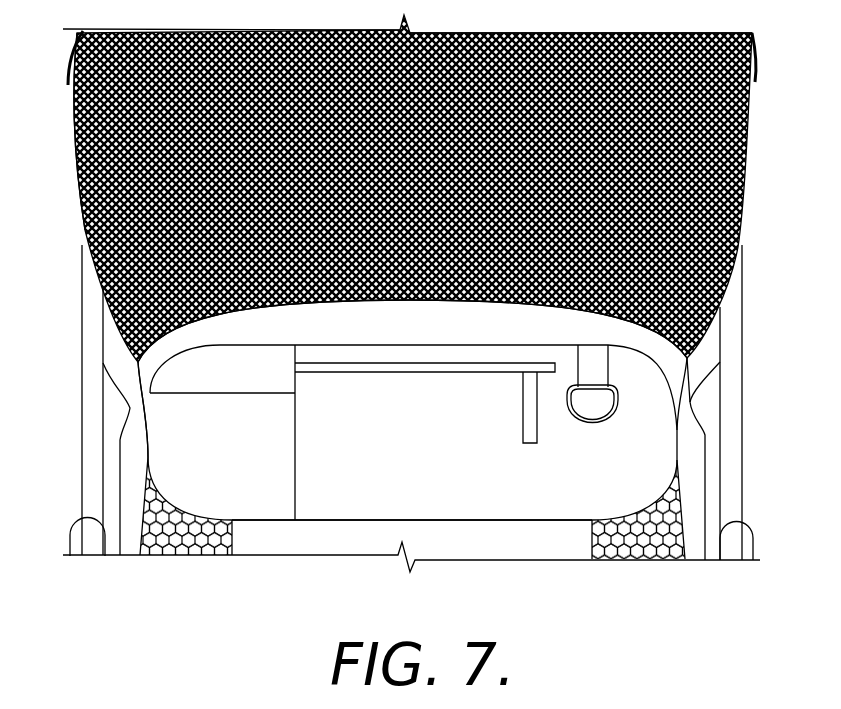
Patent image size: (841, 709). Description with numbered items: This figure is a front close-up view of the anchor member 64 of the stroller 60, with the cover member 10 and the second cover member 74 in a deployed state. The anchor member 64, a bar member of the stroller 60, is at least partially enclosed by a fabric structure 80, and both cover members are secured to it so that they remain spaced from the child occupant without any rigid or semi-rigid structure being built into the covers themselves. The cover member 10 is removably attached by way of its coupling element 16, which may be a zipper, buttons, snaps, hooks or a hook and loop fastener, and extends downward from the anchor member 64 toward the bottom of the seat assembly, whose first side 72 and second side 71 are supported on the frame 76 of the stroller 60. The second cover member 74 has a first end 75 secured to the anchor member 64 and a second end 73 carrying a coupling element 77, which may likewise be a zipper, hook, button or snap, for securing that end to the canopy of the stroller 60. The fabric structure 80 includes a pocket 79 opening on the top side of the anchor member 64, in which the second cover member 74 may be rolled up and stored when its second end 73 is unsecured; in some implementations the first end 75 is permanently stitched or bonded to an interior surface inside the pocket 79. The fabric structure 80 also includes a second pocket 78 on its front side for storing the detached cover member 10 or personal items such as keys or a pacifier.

The cover member 10 is at (648, 538).
The coupling element 16 is at (193, 520).
The stroller 60 is at (760, 515).
The anchor member 64 is at (140, 377).
The second side 71 is at (125, 470).
The first side 72 is at (698, 437).
The second end 73 is at (752, 85).
The second cover member 74 is at (95, 255).
The first end 75 is at (127, 367).
The frame 76 is at (733, 397).
The coupling element 77 is at (757, 50).
The second pocket 78 is at (385, 410).
The pocket 79 is at (643, 337).
The fabric structure 80 is at (477, 521).